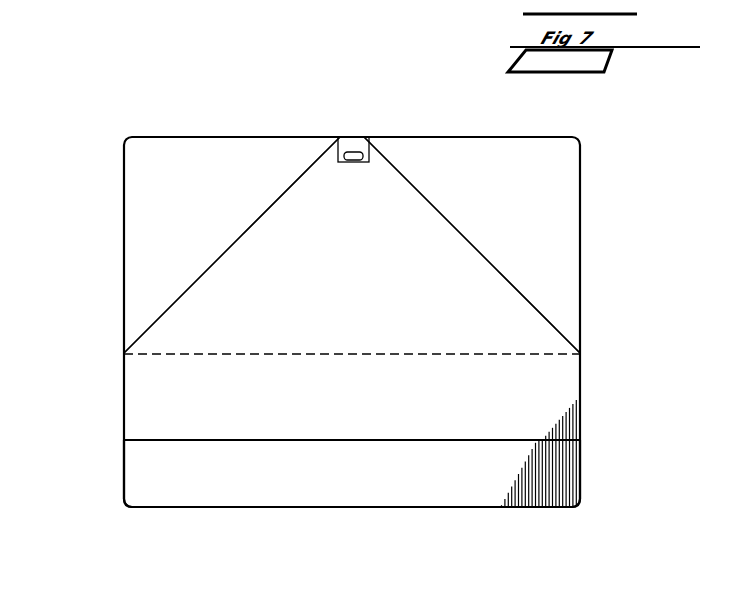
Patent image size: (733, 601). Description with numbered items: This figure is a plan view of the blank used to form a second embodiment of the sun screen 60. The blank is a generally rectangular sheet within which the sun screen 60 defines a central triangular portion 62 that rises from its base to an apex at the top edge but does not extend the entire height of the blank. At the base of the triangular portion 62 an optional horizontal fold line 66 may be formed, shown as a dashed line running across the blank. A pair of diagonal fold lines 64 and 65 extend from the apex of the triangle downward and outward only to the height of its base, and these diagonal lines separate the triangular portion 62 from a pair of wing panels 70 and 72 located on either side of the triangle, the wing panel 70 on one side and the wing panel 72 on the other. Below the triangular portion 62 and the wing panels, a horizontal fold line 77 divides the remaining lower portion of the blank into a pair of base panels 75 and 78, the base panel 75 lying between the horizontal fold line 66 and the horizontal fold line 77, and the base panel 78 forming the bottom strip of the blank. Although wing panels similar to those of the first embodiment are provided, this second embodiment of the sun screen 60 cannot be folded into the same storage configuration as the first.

The sun screen 60 is at (98, 318).
The central triangular portion 62 is at (368, 250).
The diagonal fold line 64 is at (460, 232).
The diagonal fold line 65 is at (273, 206).
The horizontal fold line 66 is at (492, 356).
The wing panel 70 is at (546, 241).
The wing panel 72 is at (177, 241).
The base panel 75 is at (363, 422).
The horizontal fold line 77 is at (236, 440).
The base panel 78 is at (218, 490).